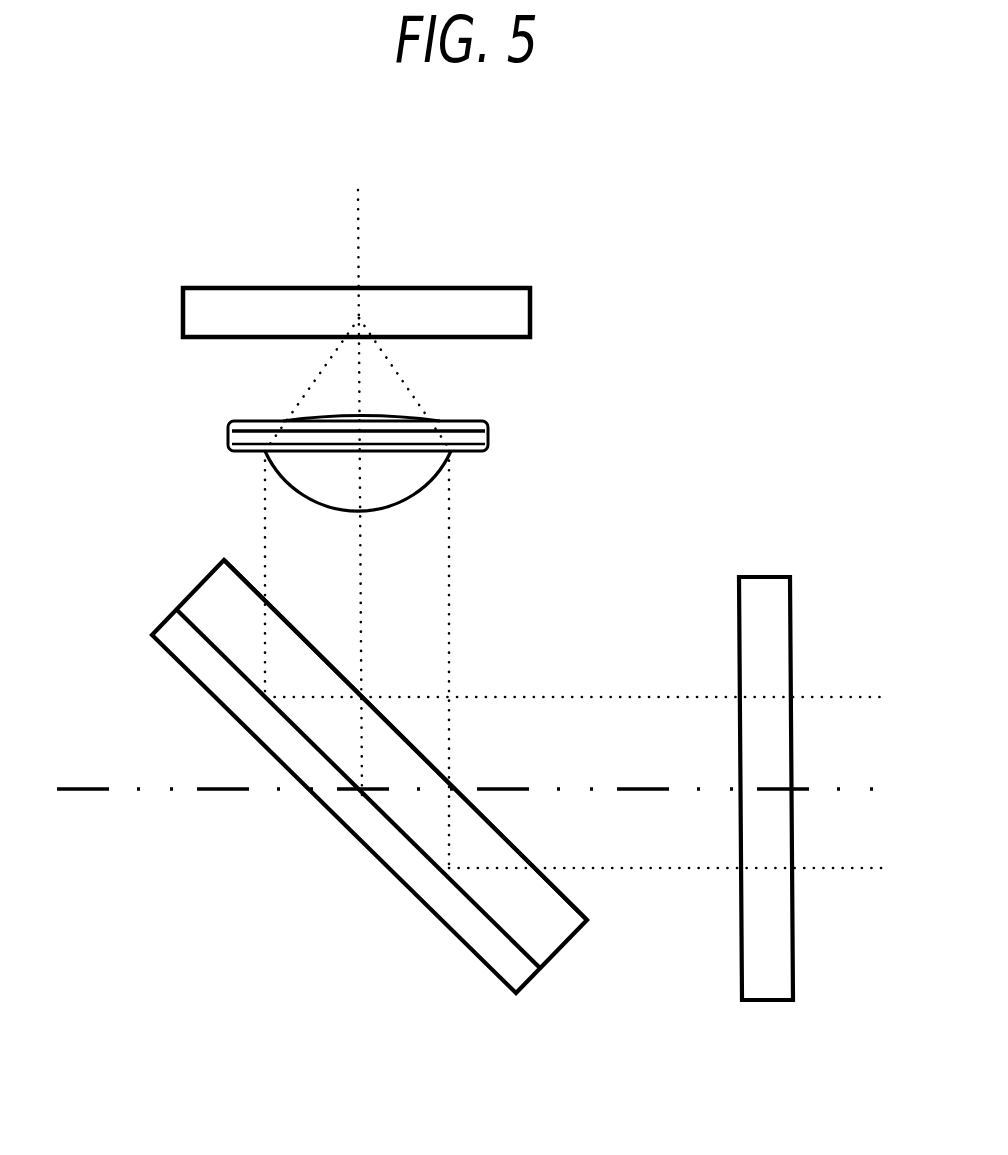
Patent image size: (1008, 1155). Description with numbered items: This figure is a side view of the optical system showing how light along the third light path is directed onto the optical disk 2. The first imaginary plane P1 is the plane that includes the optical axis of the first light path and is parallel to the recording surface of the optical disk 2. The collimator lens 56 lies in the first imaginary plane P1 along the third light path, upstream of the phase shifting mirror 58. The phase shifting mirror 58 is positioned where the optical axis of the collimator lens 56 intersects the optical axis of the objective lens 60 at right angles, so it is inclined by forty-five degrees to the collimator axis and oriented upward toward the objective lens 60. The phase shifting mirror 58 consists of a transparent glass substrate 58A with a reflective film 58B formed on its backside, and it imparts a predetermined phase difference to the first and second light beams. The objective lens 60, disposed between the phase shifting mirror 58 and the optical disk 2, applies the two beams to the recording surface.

The optical disk 2 is at (462, 287).
The collimator lens 56 is at (767, 586).
The phase shifting mirror 58 is at (428, 805).
The transparent glass substrate 58A is at (557, 918).
The reflective film 58B is at (478, 943).
The objective lens 60 is at (425, 483).
The first imaginary plane P1 is at (90, 789).